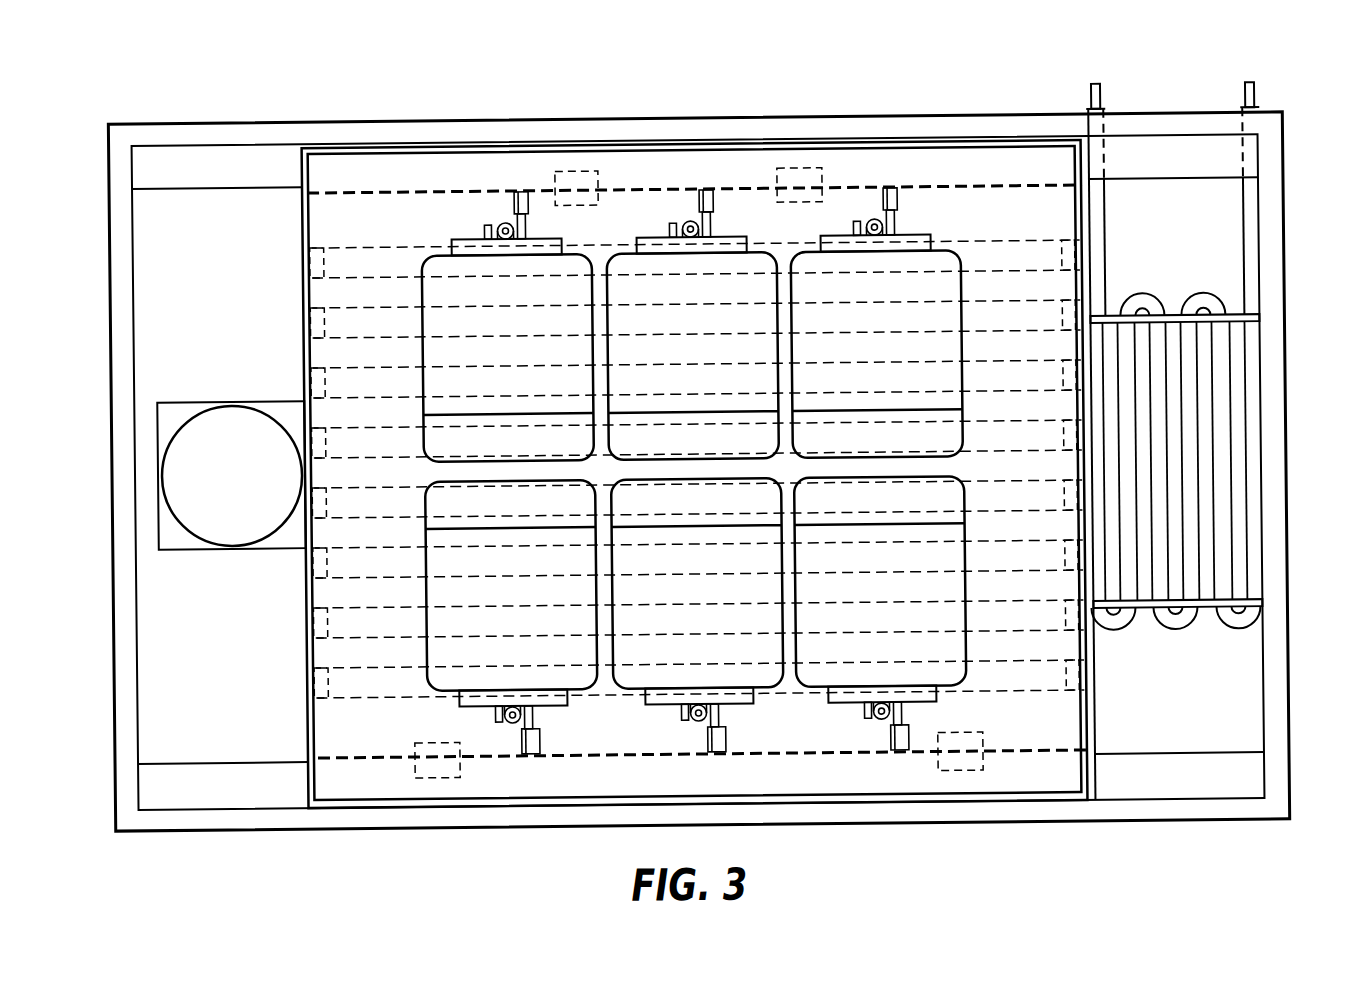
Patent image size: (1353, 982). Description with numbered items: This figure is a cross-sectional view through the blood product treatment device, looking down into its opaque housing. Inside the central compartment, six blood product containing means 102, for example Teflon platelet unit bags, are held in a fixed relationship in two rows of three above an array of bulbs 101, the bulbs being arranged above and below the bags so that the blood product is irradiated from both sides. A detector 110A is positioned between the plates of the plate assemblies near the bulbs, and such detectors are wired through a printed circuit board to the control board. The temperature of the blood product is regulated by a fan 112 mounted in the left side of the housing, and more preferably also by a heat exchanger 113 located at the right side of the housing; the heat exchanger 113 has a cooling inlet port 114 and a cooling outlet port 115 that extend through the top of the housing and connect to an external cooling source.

The array of bulbs 101 is at (742, 450).
The blood product containing means 102 is at (965, 592).
The detector 110A is at (529, 136).
The fan 112 is at (227, 448).
The heat exchanger 113 is at (1219, 430).
The cooling inlet port 114 is at (1131, 420).
The cooling outlet port 115 is at (1294, 173).